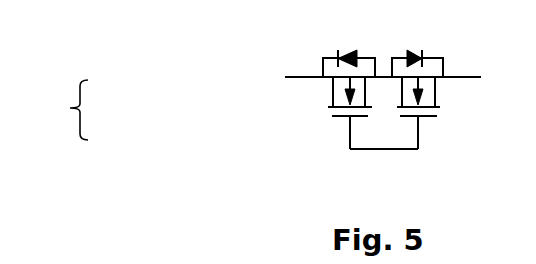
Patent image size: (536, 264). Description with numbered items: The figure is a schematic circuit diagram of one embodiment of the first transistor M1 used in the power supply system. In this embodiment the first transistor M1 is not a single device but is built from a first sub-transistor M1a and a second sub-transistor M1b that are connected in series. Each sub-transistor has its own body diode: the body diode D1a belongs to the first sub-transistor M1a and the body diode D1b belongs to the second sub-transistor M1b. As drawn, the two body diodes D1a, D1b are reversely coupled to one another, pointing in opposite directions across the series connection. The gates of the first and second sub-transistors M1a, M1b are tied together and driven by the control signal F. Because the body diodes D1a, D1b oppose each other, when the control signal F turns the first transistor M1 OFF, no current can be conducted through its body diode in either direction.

The first transistor M1 is at (85, 110).
The first sub-transistor M1a is at (325, 113).
The second sub-transistor M1b is at (442, 113).
The body diode of the first sub-transistor D1a is at (349, 50).
The body diode of the second sub-transistor D1b is at (417, 50).
The control signal F is at (384, 163).